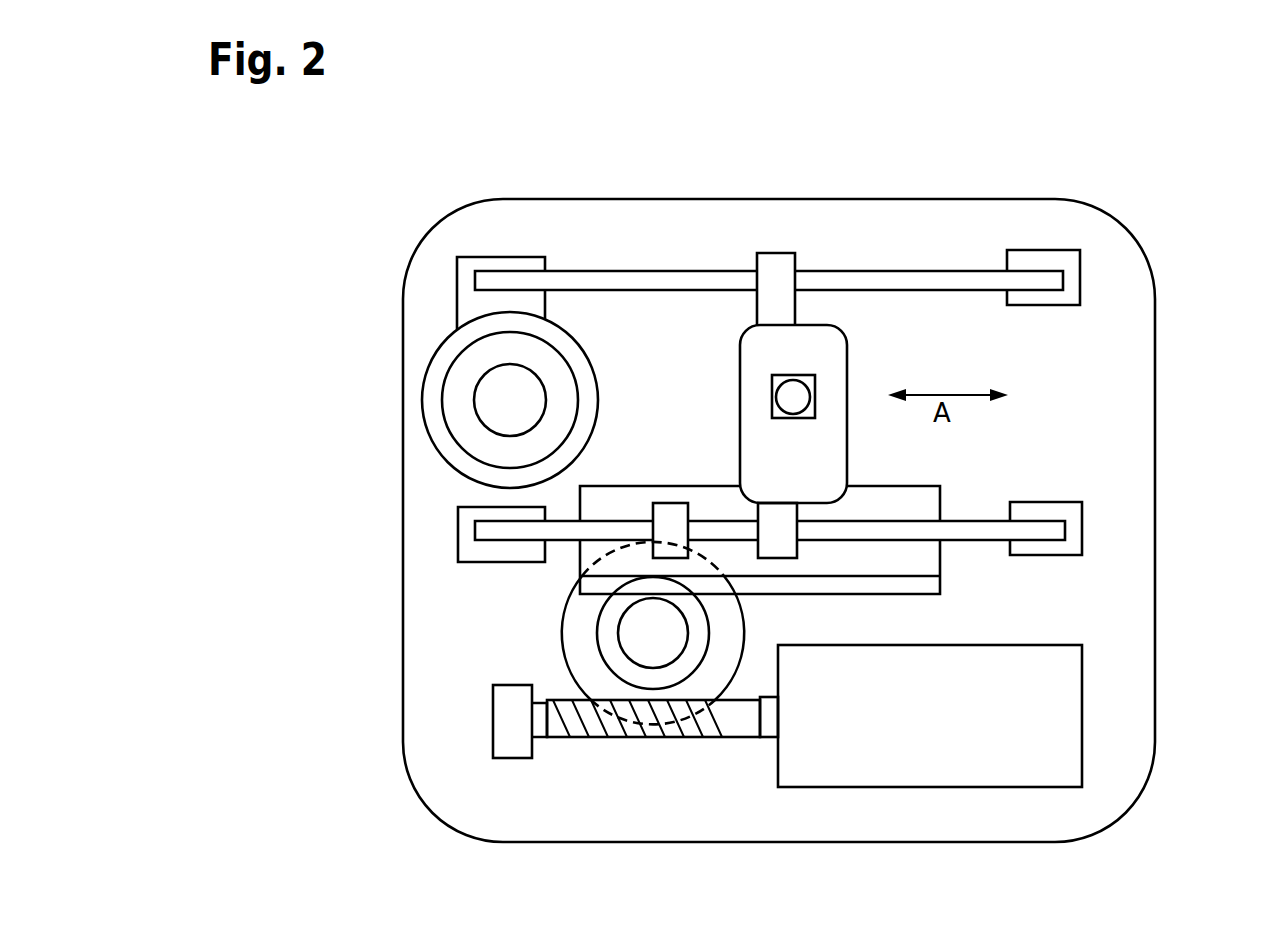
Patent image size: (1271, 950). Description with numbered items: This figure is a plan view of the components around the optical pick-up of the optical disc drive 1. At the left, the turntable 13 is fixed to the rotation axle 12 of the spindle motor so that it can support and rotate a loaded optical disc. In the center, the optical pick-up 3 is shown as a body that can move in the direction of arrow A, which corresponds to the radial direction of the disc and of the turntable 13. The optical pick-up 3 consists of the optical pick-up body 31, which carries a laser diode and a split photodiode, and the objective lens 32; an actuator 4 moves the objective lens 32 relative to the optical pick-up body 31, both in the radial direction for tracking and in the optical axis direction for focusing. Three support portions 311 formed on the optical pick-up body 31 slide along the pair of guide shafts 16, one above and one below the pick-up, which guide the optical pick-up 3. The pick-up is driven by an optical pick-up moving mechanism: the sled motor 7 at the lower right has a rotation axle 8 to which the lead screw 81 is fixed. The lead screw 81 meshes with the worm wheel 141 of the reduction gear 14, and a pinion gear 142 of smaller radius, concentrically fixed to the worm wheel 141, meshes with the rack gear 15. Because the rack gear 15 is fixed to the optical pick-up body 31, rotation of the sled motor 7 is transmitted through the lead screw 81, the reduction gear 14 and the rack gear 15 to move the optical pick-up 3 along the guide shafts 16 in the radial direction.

The optical disc drive 1 is at (1200, 240).
The optical pick-up 3 is at (946, 354).
The optical pick-up body 31 is at (823, 452).
The objective lens 32 is at (802, 392).
The support portions 311 is at (772, 292).
The actuator 4 is at (772, 392).
The sled motor 7 is at (965, 730).
The rotation axle 8 is at (635, 796).
The lead screw 81 is at (600, 725).
The rotation axle 12 is at (478, 413).
The turntable 13 is at (437, 378).
The reduction gear 14 is at (528, 633).
The worm wheel 141 is at (578, 660).
The pinion gear 142 is at (605, 625).
The rack gear 15 is at (885, 580).
The guide shafts 16 is at (897, 277).